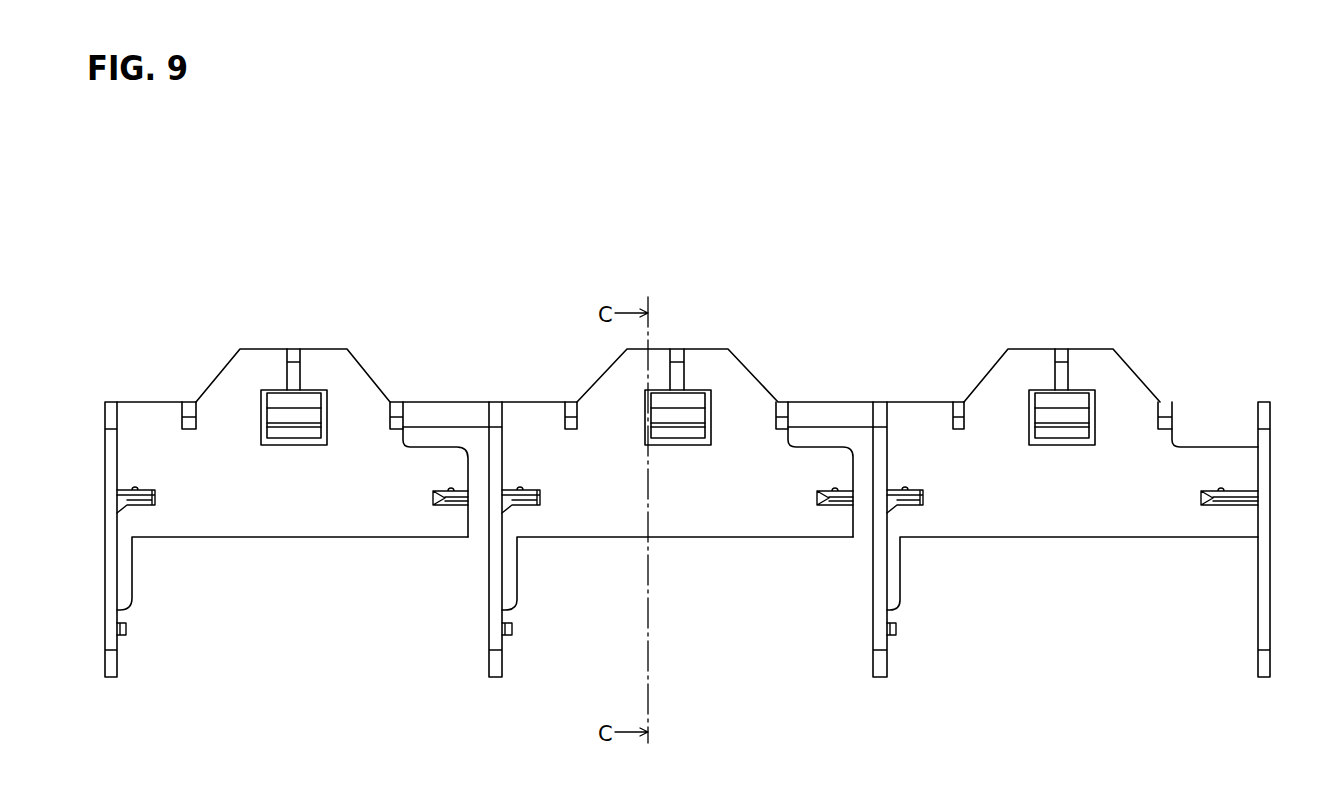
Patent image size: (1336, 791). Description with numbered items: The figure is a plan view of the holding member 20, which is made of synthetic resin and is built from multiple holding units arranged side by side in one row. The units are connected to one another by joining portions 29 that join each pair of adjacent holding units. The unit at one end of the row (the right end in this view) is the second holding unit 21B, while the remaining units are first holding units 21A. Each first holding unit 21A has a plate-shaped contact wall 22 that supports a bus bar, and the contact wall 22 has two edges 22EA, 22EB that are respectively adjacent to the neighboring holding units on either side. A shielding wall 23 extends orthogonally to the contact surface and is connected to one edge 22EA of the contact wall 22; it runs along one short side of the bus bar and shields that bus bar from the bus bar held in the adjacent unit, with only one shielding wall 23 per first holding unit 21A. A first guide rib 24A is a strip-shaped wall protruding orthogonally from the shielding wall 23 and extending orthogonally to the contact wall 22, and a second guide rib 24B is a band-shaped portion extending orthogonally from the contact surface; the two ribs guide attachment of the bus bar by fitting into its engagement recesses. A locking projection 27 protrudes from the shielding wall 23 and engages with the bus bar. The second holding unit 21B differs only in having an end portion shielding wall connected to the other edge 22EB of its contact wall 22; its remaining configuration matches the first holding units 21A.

The holding member 20 is at (990, 192).
The first holding unit 21A is at (345, 316).
The second holding unit 21B is at (976, 331).
The contact wall 22 is at (697, 507).
The one edge of the contact wall 22EA is at (501, 449).
The other edge of the contact wall 22EB is at (855, 469).
The shielding wall 23 is at (493, 560).
The first guide rib 24A is at (527, 495).
The second guide rib 24B is at (820, 500).
The locking projection 27 is at (512, 628).
The joining portion 29 is at (446, 413).